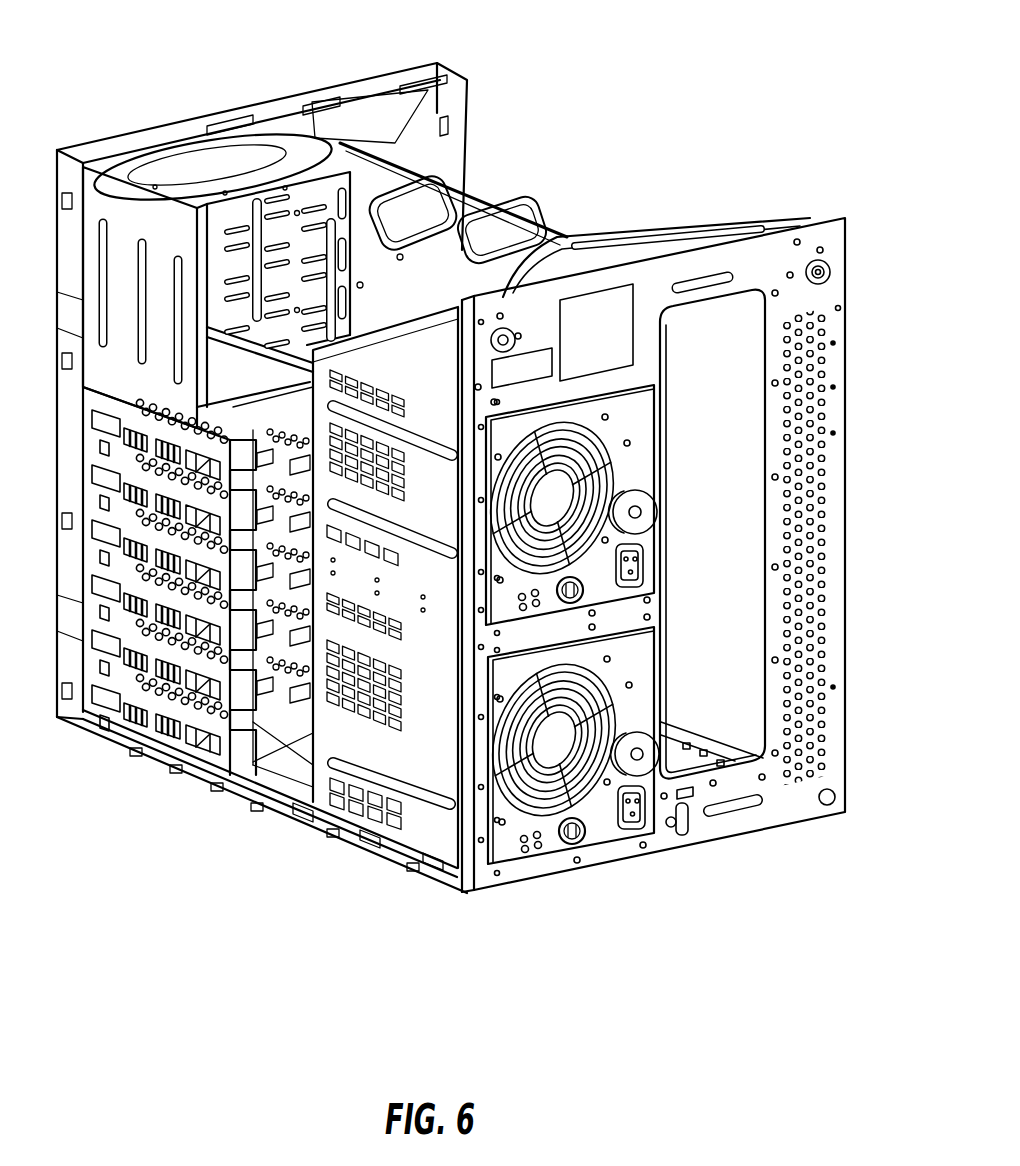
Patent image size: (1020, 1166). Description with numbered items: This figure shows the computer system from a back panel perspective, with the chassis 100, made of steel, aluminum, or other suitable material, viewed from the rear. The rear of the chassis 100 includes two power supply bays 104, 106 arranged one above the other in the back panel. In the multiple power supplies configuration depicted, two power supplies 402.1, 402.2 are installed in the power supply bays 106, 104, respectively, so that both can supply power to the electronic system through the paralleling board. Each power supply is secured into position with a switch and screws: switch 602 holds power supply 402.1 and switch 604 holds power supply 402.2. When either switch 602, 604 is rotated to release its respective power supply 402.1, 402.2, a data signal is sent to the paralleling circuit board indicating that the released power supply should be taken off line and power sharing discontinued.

The chassis 100 is at (690, 48).
The power supply bay 104 is at (430, 483).
The power supply bay 106 is at (428, 770).
The power supply 402.1 is at (506, 848).
The power supply 402.2 is at (645, 430).
The switch 602 is at (583, 838).
The switch 604 is at (585, 594).